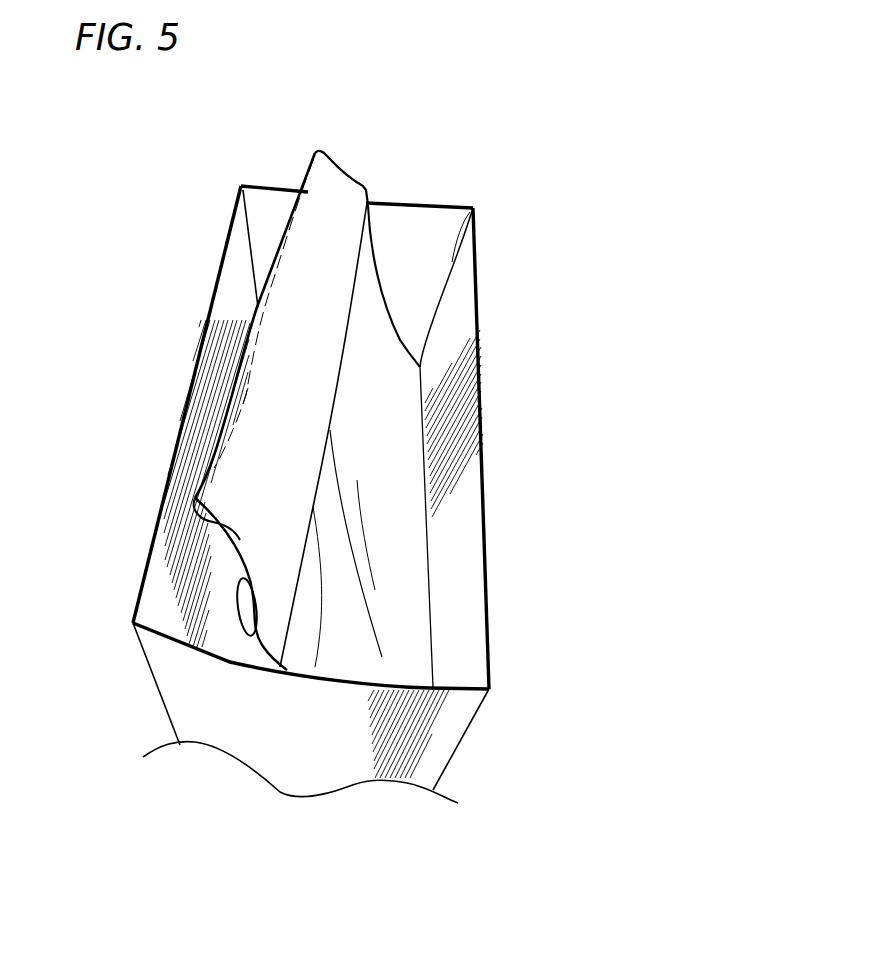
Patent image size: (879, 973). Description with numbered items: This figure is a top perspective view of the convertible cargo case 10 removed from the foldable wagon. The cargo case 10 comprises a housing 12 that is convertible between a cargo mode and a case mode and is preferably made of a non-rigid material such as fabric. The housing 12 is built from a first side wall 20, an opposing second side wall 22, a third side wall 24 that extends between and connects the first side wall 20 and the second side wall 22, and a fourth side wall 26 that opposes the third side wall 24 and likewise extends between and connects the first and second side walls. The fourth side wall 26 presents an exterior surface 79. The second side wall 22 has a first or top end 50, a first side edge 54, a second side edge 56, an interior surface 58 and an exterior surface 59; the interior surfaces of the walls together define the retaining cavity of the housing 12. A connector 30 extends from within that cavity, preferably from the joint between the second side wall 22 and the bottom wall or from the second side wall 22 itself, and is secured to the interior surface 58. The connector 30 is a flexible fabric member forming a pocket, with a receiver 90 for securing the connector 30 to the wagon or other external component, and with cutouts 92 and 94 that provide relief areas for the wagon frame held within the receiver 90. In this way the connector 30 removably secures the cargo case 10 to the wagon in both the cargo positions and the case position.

The convertible cargo case 10 is at (560, 471).
The housing 12 is at (427, 217).
The first side wall 20 is at (172, 597).
The second side wall 22 is at (482, 310).
The third side wall 24 is at (402, 218).
The fourth side wall 26 is at (343, 753).
The connector 30 is at (355, 173).
The first or top end 50 is at (480, 352).
The first side edge 54 is at (472, 718).
The second side edge 56 is at (474, 208).
The interior surface 58 is at (450, 548).
The exterior surface 59 is at (480, 388).
The exterior surface 79 is at (255, 732).
The receiver 90 is at (310, 347).
The cutout 92 is at (210, 520).
The cutout 94 is at (337, 165).